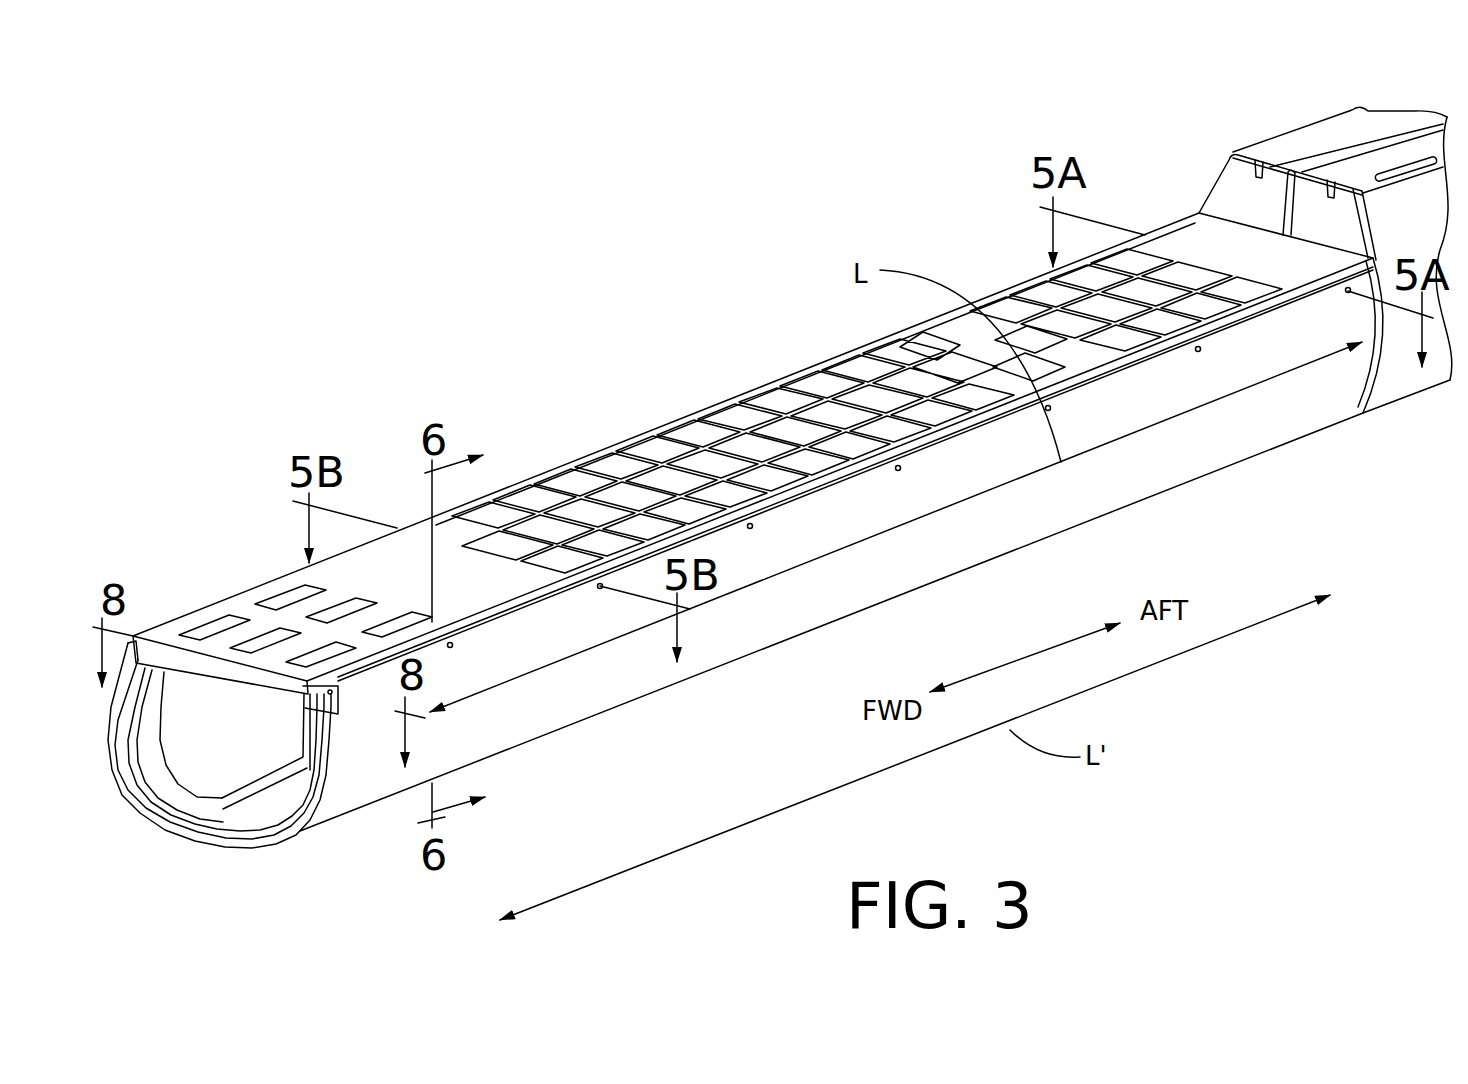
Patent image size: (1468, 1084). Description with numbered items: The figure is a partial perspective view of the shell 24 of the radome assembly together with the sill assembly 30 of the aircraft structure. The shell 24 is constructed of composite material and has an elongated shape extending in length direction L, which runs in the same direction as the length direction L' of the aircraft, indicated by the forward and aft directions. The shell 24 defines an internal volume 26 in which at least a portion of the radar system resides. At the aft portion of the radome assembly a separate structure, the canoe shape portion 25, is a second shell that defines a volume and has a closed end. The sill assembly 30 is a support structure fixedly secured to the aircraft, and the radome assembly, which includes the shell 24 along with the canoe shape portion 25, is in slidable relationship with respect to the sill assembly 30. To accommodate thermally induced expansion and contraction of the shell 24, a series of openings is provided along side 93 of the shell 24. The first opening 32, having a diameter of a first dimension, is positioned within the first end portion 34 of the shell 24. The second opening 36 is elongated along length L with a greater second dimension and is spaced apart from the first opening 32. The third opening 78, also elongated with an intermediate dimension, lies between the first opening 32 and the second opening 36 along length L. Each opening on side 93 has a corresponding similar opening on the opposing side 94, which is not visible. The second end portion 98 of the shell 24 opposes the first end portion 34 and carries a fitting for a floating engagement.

The shell 24 is at (1045, 510).
The canoe shape portion 25 is at (1442, 250).
The internal volume 26 is at (278, 740).
The sill assembly 30 is at (783, 397).
The first opening 32 is at (1340, 295).
The first end portion 34 is at (1340, 385).
The second opening 36 is at (432, 622).
The third opening 78 is at (898, 465).
The side 93 is at (818, 609).
The opposing side 94 is at (667, 352).
The second end portion 98 is at (430, 742).